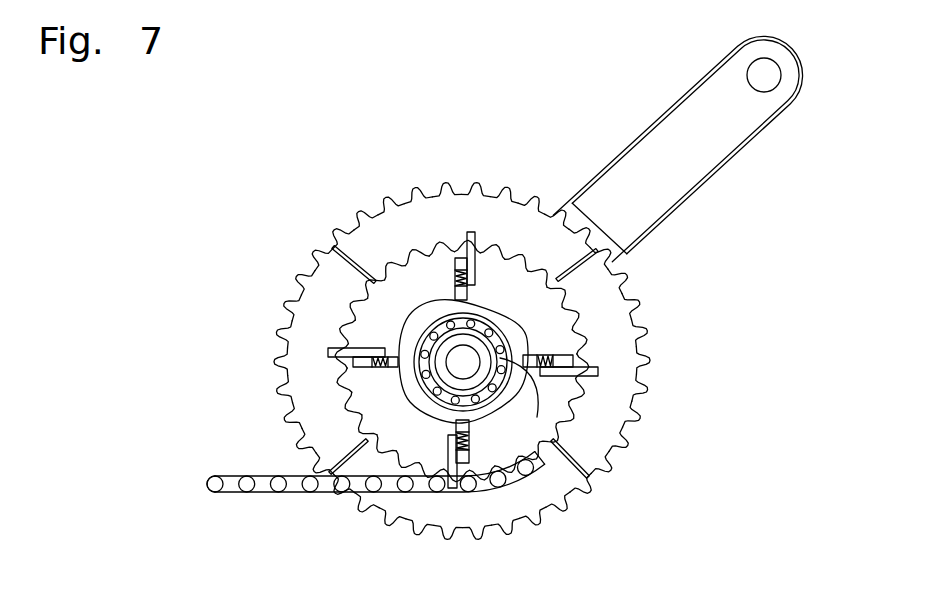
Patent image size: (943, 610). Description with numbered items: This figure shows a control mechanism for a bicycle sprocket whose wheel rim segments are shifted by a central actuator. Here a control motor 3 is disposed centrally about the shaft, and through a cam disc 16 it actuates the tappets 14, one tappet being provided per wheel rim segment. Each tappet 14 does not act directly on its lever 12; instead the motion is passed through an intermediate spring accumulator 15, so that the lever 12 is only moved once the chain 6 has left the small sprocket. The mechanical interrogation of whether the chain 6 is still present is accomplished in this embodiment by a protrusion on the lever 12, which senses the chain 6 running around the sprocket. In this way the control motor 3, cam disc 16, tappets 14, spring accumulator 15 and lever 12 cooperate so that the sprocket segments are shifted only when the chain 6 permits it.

The control motor 3 is at (413, 330).
The cam disc 16 is at (410, 380).
The tappet 14 is at (460, 419).
The spring accumulator 15 is at (449, 438).
The lever 12 is at (470, 486).
The chain 6 is at (440, 486).